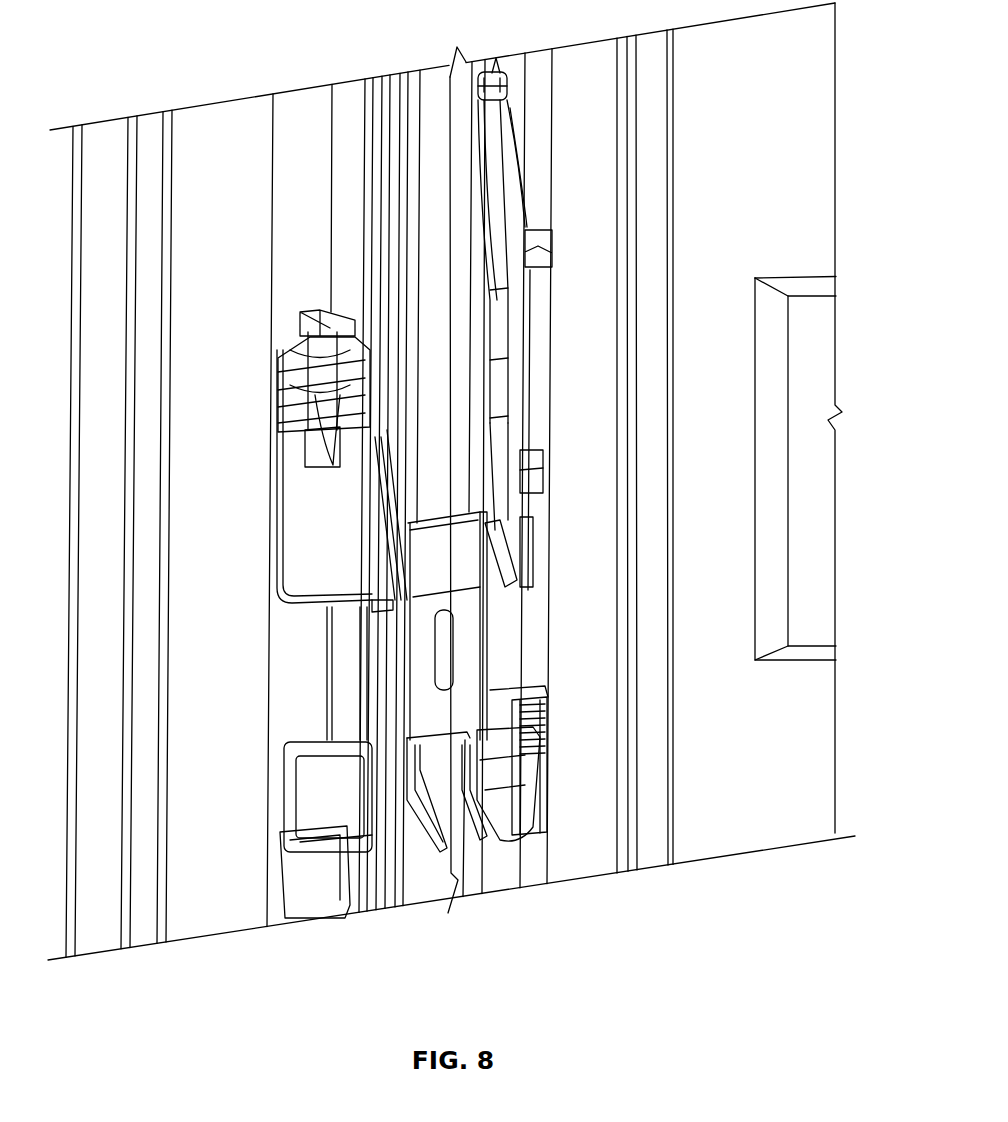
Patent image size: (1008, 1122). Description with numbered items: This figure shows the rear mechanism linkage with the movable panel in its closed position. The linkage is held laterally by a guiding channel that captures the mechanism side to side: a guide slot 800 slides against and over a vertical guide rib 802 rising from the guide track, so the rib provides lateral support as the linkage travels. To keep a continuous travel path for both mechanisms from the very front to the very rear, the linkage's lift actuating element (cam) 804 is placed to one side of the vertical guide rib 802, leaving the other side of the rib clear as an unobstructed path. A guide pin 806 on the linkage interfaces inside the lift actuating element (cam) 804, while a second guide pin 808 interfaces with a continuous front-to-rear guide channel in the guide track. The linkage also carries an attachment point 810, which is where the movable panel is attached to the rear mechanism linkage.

The guide slot 800 is at (450, 750).
The vertical guide rib 802 is at (455, 857).
The lift actuating element (cam) 804 is at (358, 527).
The guide pin 806 is at (393, 606).
The guide pin 808 is at (545, 727).
The attachment point 810 is at (508, 143).